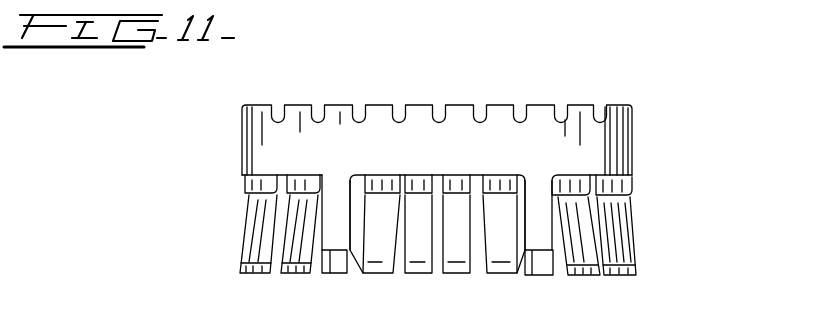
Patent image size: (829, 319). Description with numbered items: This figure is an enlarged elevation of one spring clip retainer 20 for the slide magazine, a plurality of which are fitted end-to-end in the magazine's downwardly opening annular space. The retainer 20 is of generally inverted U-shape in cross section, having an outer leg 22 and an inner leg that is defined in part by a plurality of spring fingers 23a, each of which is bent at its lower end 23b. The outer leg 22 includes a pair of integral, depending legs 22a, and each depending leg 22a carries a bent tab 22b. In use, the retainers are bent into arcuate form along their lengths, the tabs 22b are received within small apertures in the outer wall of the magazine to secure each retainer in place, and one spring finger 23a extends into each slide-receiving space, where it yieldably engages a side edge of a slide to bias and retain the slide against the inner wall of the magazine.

The spring clip retainer 20 is at (416, 127).
The outer leg 22 is at (440, 161).
The depending leg 22a is at (332, 194).
The bent tab 22b is at (336, 258).
The spring finger 23a is at (258, 243).
The lower end 23b is at (297, 273).